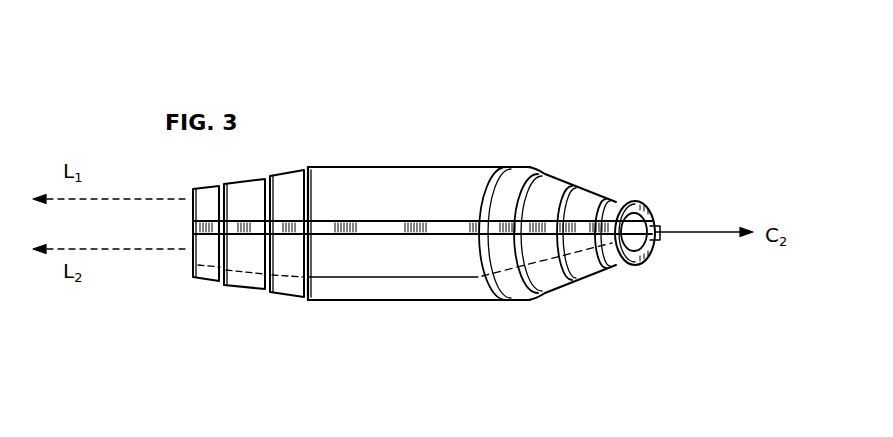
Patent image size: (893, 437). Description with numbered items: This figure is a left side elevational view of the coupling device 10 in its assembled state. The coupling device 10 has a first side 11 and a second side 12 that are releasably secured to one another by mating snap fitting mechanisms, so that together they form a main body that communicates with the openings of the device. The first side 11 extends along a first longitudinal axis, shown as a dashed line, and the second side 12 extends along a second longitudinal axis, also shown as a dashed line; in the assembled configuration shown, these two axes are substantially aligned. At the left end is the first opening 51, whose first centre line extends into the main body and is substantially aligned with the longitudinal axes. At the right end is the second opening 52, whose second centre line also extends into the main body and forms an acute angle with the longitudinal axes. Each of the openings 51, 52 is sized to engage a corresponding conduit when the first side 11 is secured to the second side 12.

The coupling device 10 is at (653, 63).
The first side 11 is at (485, 132).
The second side 12 is at (553, 302).
The first opening 51 is at (200, 283).
The second opening 52 is at (638, 268).